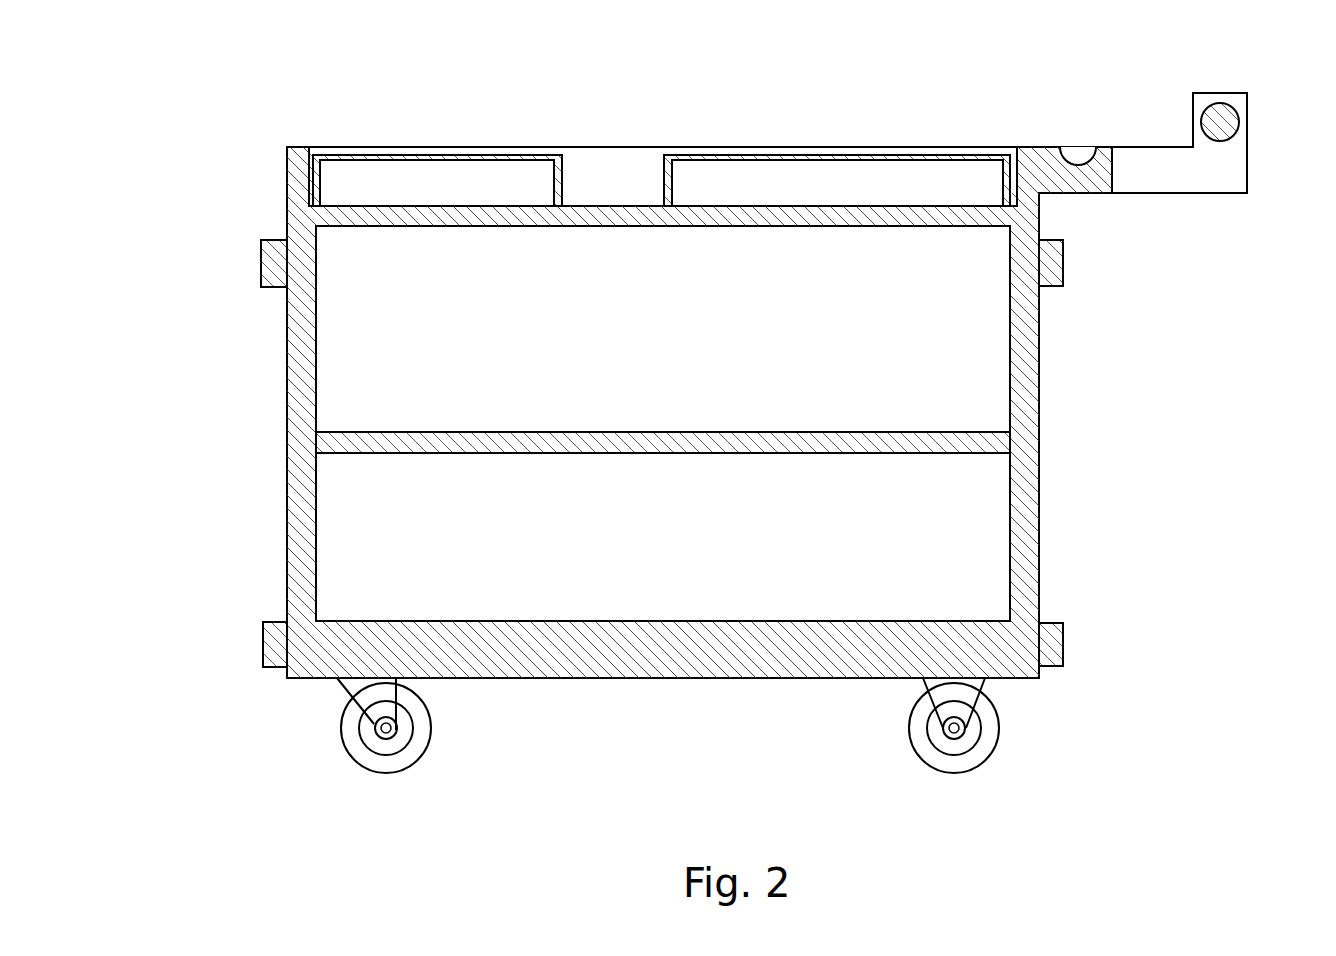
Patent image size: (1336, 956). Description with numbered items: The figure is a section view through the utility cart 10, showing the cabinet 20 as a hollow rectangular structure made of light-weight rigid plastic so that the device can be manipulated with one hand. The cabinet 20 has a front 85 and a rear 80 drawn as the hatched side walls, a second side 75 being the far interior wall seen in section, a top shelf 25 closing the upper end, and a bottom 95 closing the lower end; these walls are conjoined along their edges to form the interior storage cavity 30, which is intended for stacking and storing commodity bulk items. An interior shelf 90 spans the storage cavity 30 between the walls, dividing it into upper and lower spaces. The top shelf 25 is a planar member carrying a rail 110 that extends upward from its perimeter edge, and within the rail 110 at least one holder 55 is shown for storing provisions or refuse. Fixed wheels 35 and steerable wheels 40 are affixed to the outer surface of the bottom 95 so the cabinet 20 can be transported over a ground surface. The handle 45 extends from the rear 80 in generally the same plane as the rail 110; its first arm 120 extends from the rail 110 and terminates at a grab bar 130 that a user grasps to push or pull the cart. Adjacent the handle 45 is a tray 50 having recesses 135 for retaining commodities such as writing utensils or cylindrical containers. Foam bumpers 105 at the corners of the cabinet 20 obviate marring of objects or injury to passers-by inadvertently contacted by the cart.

The utility cart 10 is at (734, 396).
The cabinet 20 is at (664, 400).
The top shelf 25 is at (592, 205).
The interior storage cavity 30 is at (937, 380).
The fixed wheels 35 is at (922, 743).
The steerable wheels 40 is at (421, 742).
The handle 45 is at (1218, 128).
The tray 50 is at (1043, 156).
The holder 55 is at (442, 175).
The second side 75 is at (950, 525).
The rear 80 is at (1028, 395).
The front 85 is at (293, 372).
The interior shelf 90 is at (340, 443).
The bottom 95 is at (692, 663).
The foam bumpers 105 is at (272, 252).
The rail 110 is at (600, 162).
The first arm 120 is at (1161, 160).
The grab bar 130 is at (1230, 122).
The recesses 135 is at (1077, 152).